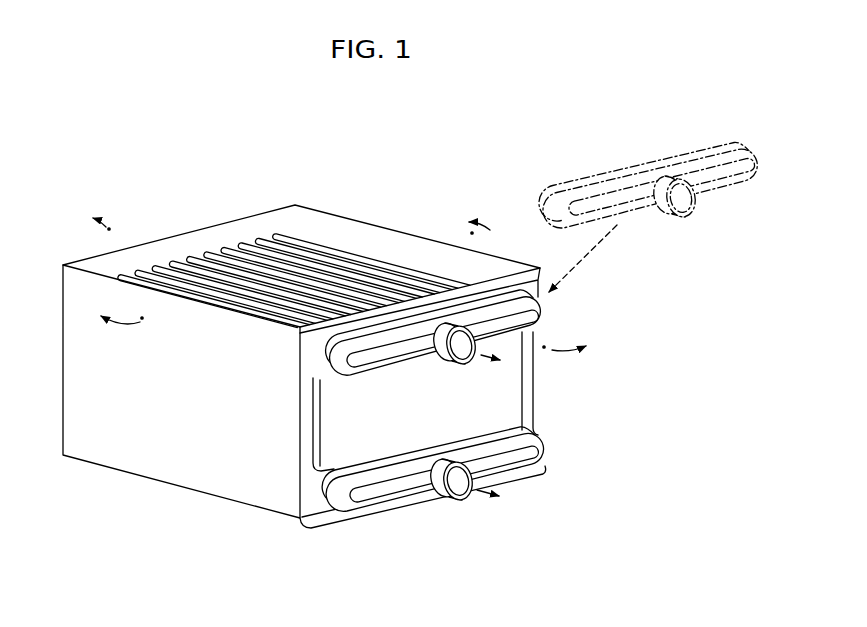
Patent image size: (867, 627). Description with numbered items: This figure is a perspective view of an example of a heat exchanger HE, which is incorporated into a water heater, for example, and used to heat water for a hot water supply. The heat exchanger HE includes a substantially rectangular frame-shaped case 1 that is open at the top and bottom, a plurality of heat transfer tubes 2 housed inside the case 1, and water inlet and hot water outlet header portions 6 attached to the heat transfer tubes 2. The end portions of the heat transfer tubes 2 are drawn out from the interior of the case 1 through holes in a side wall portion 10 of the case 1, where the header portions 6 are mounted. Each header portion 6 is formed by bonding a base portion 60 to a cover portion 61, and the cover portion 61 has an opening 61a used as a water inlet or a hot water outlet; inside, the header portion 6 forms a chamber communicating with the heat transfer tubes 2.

The heat exchanger HE is at (212, 182).
The case 1 is at (407, 236).
The heat transfer tubes 2 is at (318, 265).
The header portions 6 is at (541, 334).
The side wall portion 10 is at (528, 412).
The base portion 60 is at (588, 181).
The cover portion 61 is at (353, 373).
The opening 61a is at (460, 352).